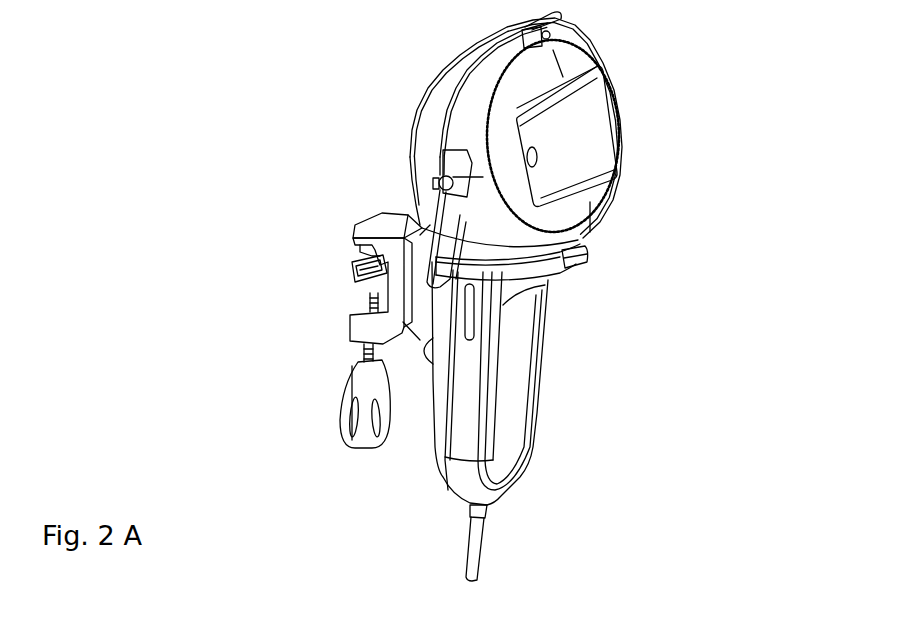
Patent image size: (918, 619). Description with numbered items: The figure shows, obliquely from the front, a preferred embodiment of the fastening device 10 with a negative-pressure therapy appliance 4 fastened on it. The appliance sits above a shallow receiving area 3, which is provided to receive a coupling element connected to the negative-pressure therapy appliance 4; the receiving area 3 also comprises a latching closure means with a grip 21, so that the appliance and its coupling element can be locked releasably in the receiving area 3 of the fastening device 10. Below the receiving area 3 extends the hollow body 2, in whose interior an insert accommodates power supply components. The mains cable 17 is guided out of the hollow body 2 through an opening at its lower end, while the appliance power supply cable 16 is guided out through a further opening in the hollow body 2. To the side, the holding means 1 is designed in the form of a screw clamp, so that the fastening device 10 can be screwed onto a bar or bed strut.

The holding means 1 is at (349, 264).
The hollow body 2 is at (517, 377).
The receiving area 3 is at (488, 274).
The negative-pressure therapy appliance 4 is at (497, 73).
The fastening device 10 is at (684, 461).
The appliance power supply cable 16 is at (428, 226).
The mains cable 17 is at (470, 547).
The grip 21 is at (590, 267).